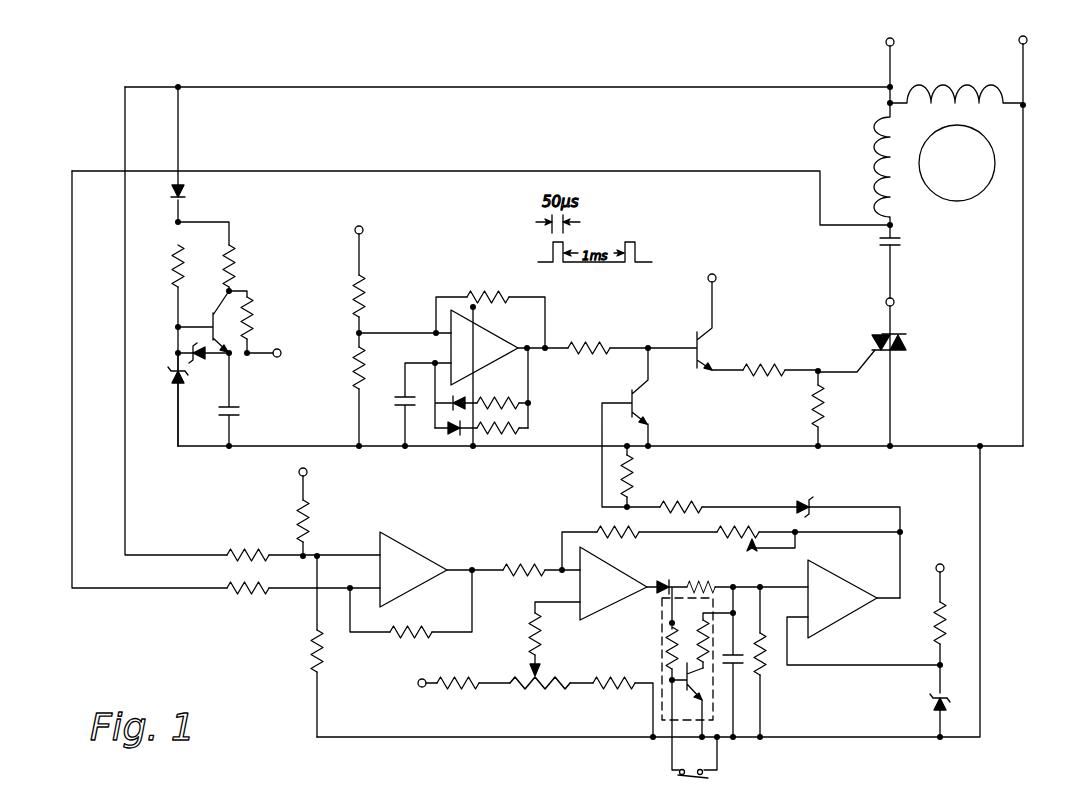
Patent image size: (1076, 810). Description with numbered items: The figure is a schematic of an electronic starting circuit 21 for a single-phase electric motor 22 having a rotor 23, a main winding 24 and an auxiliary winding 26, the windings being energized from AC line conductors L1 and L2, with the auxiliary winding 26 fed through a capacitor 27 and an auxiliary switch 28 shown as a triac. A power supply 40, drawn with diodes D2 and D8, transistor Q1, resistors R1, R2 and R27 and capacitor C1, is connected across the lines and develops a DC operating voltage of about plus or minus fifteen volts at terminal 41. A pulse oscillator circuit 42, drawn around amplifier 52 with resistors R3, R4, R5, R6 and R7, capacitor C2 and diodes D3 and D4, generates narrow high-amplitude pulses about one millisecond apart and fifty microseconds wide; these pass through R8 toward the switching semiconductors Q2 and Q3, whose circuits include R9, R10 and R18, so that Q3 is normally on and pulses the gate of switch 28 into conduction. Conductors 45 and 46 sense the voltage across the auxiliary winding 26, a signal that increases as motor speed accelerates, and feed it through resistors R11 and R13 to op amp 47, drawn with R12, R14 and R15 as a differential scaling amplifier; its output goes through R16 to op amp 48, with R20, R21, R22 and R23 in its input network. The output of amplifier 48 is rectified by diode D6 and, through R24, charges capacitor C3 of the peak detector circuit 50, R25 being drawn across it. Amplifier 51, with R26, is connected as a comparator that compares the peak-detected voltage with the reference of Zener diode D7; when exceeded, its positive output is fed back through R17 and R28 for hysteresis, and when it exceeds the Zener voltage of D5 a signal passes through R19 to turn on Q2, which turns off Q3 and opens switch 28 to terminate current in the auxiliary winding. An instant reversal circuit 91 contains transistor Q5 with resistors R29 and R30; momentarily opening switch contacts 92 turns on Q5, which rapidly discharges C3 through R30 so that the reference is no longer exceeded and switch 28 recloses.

The electronic starting circuit 21 is at (525, 77).
The single-phase electric motor 22 is at (946, 231).
The rotor 23 is at (995, 164).
The first main winding 24 is at (933, 85).
The auxiliary winding 26 is at (872, 148).
The capacitor 27 is at (893, 250).
The auxiliary switch 28 is at (893, 334).
The power supply 40 is at (249, 234).
The terminal 41 is at (281, 351).
The pulse oscillator circuit 42 is at (493, 270).
The conductor 45 is at (123, 294).
The conductor 46 is at (73, 339).
The differential amplifier 47 is at (410, 559).
The op amp 48 is at (617, 580).
The peak detector circuit 50 is at (597, 529).
The comparator amplifier 51 is at (845, 584).
The oscillator amplifier 52 is at (490, 332).
The instant reversal circuit 91 is at (672, 669).
The switch contacts 92 is at (712, 778).
The AC line conductor L1 is at (884, 60).
The AC line conductor L2 is at (1022, 231).
The resistor R1 is at (174, 261).
The resistor R2 is at (236, 264).
The resistor R3 is at (362, 297).
The resistor R4 is at (357, 382).
The resistor R5 is at (473, 296).
The resistor R6 is at (516, 404).
The resistor R7 is at (508, 430).
The resistor R8 is at (602, 347).
The resistor R9 is at (746, 362).
The resistor R10 is at (815, 421).
The resistor R11 is at (229, 547).
The resistor R12 is at (306, 516).
The resistor R13 is at (240, 598).
The resistor R14 is at (313, 667).
The resistor R15 is at (406, 642).
The resistor R16 is at (525, 562).
The feedback resistor R17 is at (640, 534).
The resistor R18 is at (632, 470).
The resistor R19 is at (712, 493).
The resistor R20 is at (556, 639).
The resistor R21 is at (455, 691).
The potentiometer R22 is at (535, 692).
The resistor R23 is at (596, 690).
The resistor R24 is at (711, 586).
The resistor R25 is at (764, 676).
The resistor R26 is at (934, 633).
The resistor R27 is at (250, 326).
The feedback resistor R28 is at (738, 540).
The resistor R29 is at (668, 636).
The resistor R30 is at (696, 622).
The capacitor C1 is at (235, 402).
The capacitor C2 is at (400, 404).
The capacitor C3 is at (737, 664).
The zener diode D2 is at (172, 384).
The diode D3 is at (448, 404).
The diode D4 is at (448, 430).
The Zener diode D5 is at (808, 500).
The diode D6 is at (662, 582).
The Zener diode D7 is at (932, 704).
The zener diode D8 is at (205, 360).
The transistor Q1 is at (215, 318).
The semiconductor Q2 is at (636, 403).
The semiconductor Q3 is at (702, 353).
The semiconductor Q5 is at (686, 683).